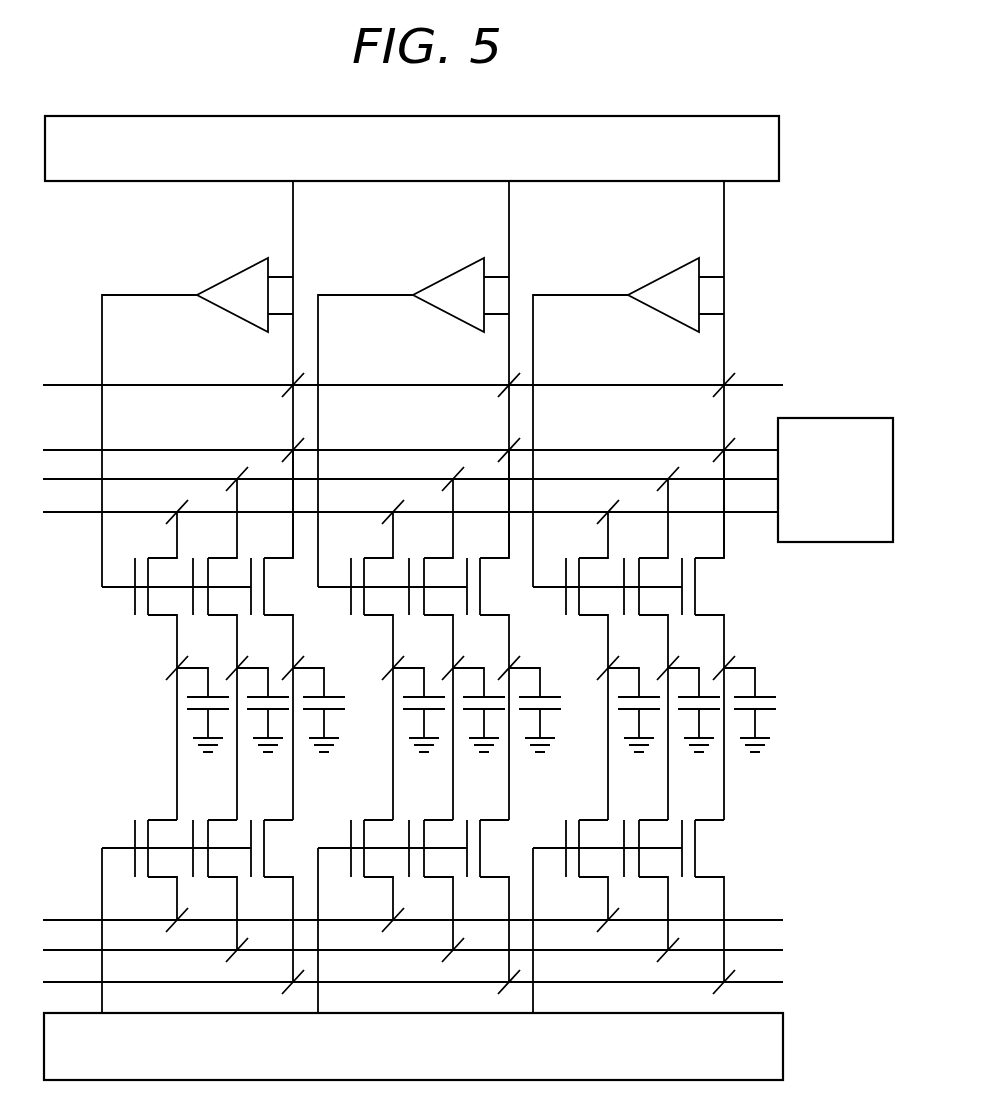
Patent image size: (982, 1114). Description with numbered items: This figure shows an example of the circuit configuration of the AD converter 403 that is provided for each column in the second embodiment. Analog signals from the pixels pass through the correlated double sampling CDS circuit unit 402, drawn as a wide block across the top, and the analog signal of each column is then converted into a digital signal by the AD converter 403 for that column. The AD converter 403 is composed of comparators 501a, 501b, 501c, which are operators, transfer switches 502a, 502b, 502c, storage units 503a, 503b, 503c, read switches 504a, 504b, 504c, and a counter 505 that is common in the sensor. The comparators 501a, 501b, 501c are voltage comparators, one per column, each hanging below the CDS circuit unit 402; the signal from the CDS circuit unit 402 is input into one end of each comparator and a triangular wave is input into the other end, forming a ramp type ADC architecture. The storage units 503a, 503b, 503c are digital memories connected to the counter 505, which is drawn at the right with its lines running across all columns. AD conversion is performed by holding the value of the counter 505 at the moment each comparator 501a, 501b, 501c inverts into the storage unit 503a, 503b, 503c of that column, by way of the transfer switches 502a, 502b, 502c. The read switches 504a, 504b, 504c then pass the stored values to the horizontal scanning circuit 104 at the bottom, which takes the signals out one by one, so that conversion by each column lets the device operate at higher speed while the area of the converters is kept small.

The horizontal scanning circuit 104 is at (784, 1040).
The CDS circuit unit 402 is at (780, 145).
The AD converter 403 is at (814, 264).
The comparator 501a is at (235, 272).
The comparator 501b is at (451, 272).
The comparator 501c is at (665, 272).
The transfer switch 502a is at (127, 592).
The transfer switch 502b is at (345, 592).
The transfer switch 502c is at (560, 592).
The storage unit 503a is at (335, 750).
The storage unit 503b is at (549, 750).
The storage unit 503c is at (773, 750).
The read switch 504a is at (128, 840).
The read switch 504b is at (492, 848).
The read switch 504c is at (712, 848).
The counter 505 is at (838, 418).